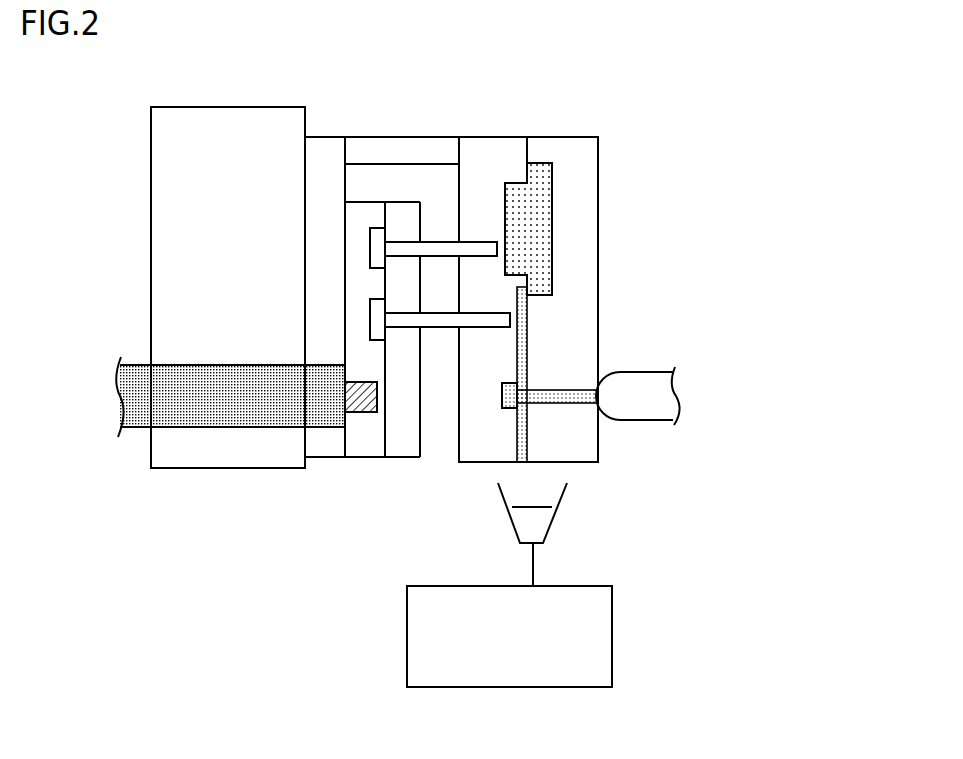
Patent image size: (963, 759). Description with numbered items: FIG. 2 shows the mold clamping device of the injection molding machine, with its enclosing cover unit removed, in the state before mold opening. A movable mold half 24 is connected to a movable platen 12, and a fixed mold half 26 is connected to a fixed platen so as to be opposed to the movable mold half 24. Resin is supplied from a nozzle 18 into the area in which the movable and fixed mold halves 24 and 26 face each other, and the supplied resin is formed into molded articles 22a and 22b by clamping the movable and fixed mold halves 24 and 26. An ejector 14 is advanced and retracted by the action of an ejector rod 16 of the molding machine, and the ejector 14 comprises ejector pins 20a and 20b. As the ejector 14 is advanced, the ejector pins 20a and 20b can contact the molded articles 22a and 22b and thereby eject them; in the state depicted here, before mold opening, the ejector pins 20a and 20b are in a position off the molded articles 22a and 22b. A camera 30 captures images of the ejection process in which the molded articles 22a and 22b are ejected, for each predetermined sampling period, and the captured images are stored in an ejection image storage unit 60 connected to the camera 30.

The movable platen 12 is at (242, 107).
The ejector 14 is at (378, 457).
The ejector rod 16 is at (215, 428).
The nozzle 18 is at (653, 422).
The ejector pin 20a is at (438, 240).
The ejector pin 20b is at (447, 330).
The molded article 22a is at (545, 238).
The molded article 22b is at (522, 325).
The movable mold half 24 is at (495, 137).
The fixed mold half 26 is at (600, 150).
The camera 30 is at (552, 525).
The ejection image storage unit 60 is at (612, 638).